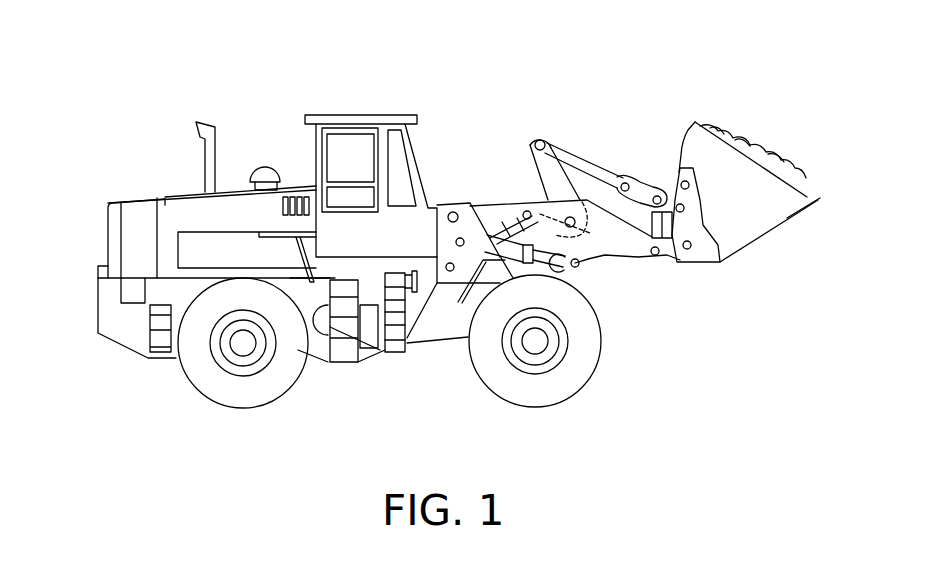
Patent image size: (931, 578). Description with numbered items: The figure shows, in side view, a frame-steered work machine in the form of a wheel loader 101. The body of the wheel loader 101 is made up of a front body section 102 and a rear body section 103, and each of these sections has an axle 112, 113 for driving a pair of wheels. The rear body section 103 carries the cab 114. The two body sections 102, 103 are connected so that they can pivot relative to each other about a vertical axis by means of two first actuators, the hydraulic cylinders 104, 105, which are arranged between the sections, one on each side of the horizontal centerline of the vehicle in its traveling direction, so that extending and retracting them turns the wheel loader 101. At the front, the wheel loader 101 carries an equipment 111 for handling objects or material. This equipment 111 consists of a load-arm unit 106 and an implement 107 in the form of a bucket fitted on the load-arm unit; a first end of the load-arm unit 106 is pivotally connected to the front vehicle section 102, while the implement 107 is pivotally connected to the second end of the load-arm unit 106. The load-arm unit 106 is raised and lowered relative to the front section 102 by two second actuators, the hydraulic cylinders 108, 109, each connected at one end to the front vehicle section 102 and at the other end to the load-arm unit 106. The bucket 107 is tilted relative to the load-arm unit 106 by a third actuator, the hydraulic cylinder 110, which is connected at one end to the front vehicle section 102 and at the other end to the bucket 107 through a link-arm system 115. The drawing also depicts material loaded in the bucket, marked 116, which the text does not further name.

The wheel loader 101 is at (278, 84).
The front body section 102 is at (425, 337).
The rear body section 103 is at (133, 329).
The hydraulic cylinder 104 is at (425, 285).
The hydraulic cylinder 105 is at (411, 311).
The load-arm unit 106 is at (675, 265).
The implement 107 is at (737, 227).
The hydraulic cylinder 108 is at (553, 263).
The hydraulic cylinder 109 is at (662, 225).
The hydraulic cylinder 110 is at (498, 203).
The equipment 111 is at (636, 117).
The axle 112 is at (237, 345).
The axle 113 is at (540, 343).
The cab 114 is at (355, 118).
The link-arm system 115 is at (590, 163).
The material load 116 is at (757, 165).